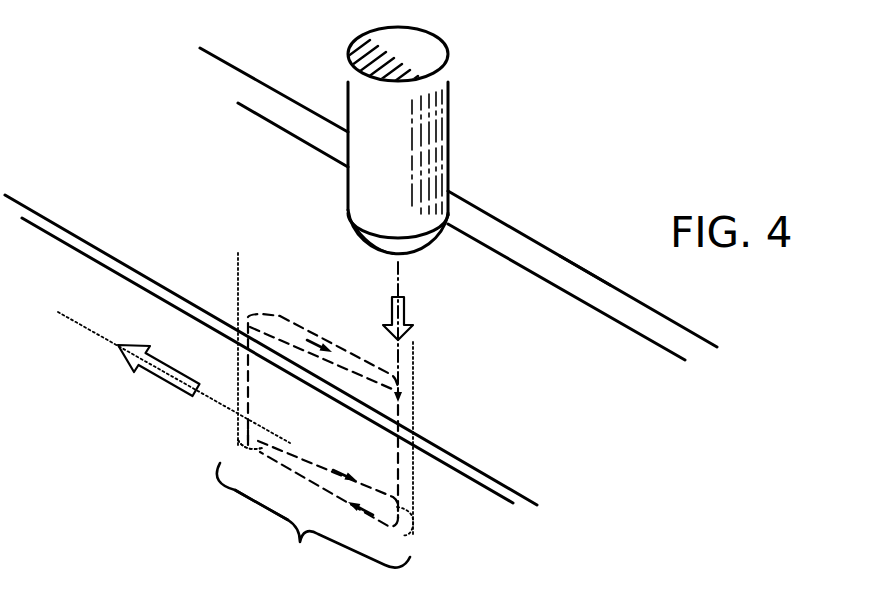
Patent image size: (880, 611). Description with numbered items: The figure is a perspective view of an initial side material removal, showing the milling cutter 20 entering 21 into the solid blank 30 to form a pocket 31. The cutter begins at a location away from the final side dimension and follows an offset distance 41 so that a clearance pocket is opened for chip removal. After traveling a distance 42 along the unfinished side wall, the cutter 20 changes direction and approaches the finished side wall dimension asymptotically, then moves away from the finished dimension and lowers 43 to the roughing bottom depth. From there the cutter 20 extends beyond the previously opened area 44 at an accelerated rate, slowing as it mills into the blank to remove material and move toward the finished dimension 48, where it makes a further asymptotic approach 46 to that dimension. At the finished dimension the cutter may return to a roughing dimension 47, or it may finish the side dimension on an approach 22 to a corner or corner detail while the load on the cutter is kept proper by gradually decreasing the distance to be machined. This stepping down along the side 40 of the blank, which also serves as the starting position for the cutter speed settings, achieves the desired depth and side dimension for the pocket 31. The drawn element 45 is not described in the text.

The milling cutter 20 is at (464, 86).
The entering 21 is at (407, 320).
The approach to a corner 22 is at (127, 378).
The solid blank 30 is at (687, 328).
The pocket 31 is at (583, 300).
The side of the blank 40 is at (298, 547).
The offset distance 41 is at (354, 372).
The distance along the side 42 is at (260, 323).
The lowering 43 is at (408, 475).
The previously opened area 44 is at (303, 488).
The return corner 45 is at (262, 452).
The asymptotic approach 46 is at (313, 468).
The roughing dimension 47 is at (418, 540).
The finished dimension 48 is at (238, 445).